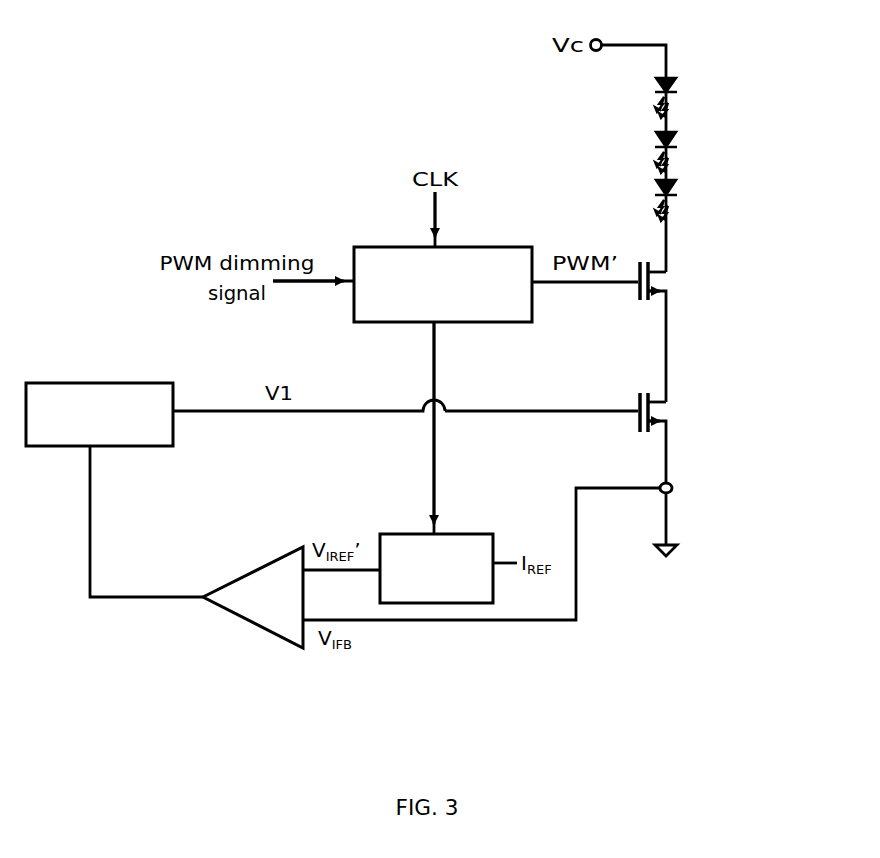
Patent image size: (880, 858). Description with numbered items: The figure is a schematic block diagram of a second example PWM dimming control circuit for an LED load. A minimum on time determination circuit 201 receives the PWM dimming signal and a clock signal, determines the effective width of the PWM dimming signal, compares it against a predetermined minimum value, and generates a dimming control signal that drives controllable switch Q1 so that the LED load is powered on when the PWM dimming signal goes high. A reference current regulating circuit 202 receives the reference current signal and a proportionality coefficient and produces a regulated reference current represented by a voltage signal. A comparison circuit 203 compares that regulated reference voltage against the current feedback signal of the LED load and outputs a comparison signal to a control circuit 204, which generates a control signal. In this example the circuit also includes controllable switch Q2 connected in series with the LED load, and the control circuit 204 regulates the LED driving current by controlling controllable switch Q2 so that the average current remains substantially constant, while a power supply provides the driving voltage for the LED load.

The minimum on time determination circuit 201 is at (443, 284).
The reference current regulating circuit 202 is at (436, 568).
The comparison circuit 203 is at (253, 597).
The control circuit 204 is at (99, 414).
The controllable switch Q1 is at (668, 284).
The controllable switch Q2 is at (668, 422).